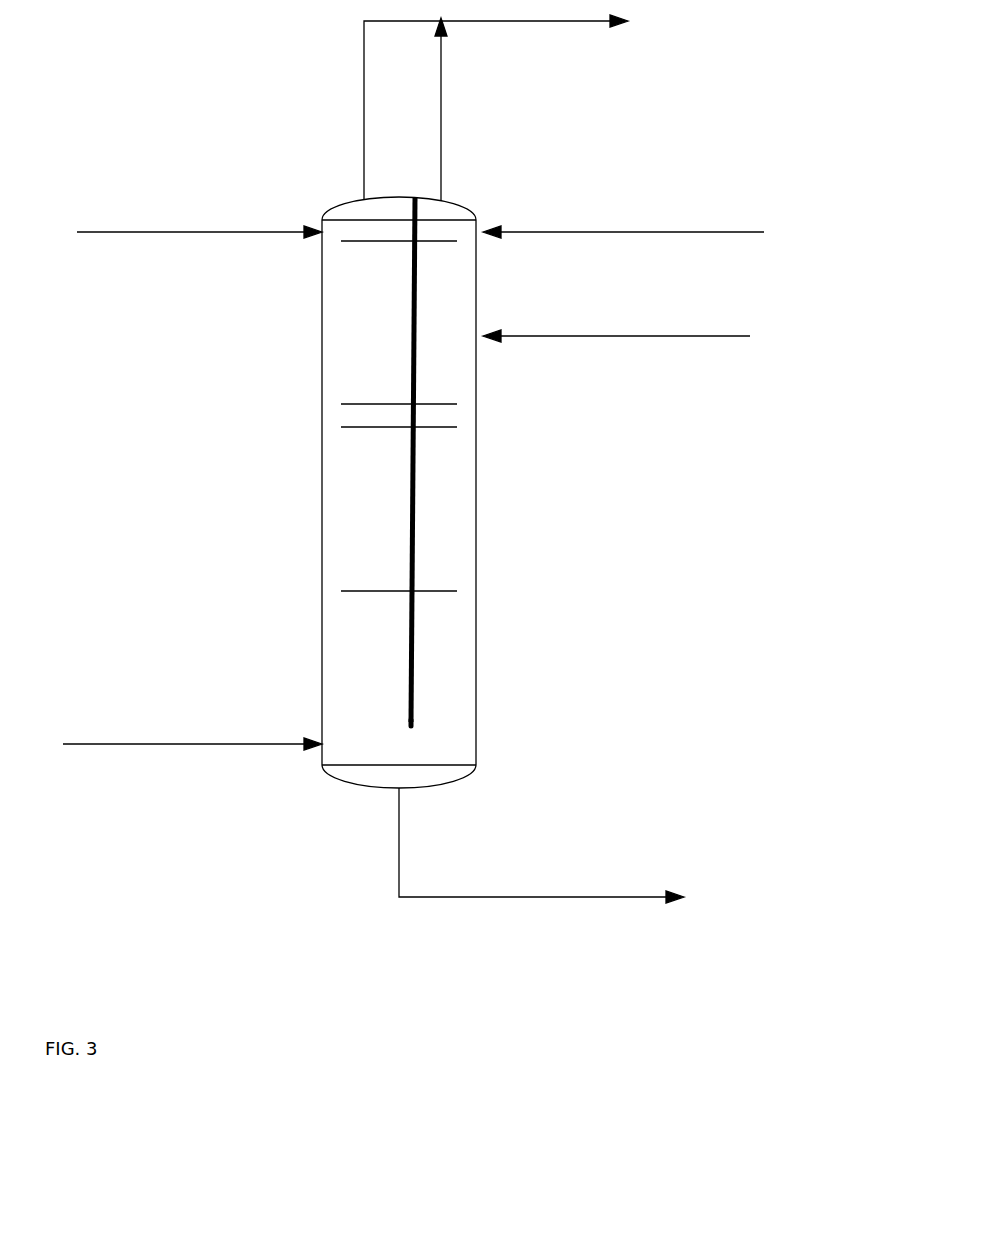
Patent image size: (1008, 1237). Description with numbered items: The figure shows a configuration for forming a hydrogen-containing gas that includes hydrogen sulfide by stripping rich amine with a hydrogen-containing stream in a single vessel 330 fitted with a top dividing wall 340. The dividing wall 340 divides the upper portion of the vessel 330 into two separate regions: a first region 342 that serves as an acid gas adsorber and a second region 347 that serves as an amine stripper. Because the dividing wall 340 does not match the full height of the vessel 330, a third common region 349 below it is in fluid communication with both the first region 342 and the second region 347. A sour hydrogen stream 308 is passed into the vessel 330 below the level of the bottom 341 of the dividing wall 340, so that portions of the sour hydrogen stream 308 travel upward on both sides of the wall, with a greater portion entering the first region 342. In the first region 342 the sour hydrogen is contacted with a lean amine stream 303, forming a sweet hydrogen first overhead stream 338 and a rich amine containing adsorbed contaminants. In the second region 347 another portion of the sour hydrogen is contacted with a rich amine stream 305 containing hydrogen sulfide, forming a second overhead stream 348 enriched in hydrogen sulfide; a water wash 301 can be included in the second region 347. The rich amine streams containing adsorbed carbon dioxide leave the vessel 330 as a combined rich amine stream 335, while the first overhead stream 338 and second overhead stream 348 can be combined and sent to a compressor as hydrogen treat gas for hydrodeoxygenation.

The water wash 301 is at (722, 222).
The lean amine stream 303 is at (134, 252).
The rich amine stream 305 is at (763, 330).
The sour hydrogen stream 308 is at (191, 723).
The vessel 330 is at (531, 486).
The combined rich amine stream 335 is at (677, 882).
The first overhead stream 338 is at (344, 133).
The dividing wall 340 is at (425, 512).
The bottom of dividing wall 341 is at (419, 728).
The first region 342 is at (350, 471).
The second region 347 is at (458, 488).
The second overhead stream 348 is at (458, 133).
The third common region 349 is at (382, 755).